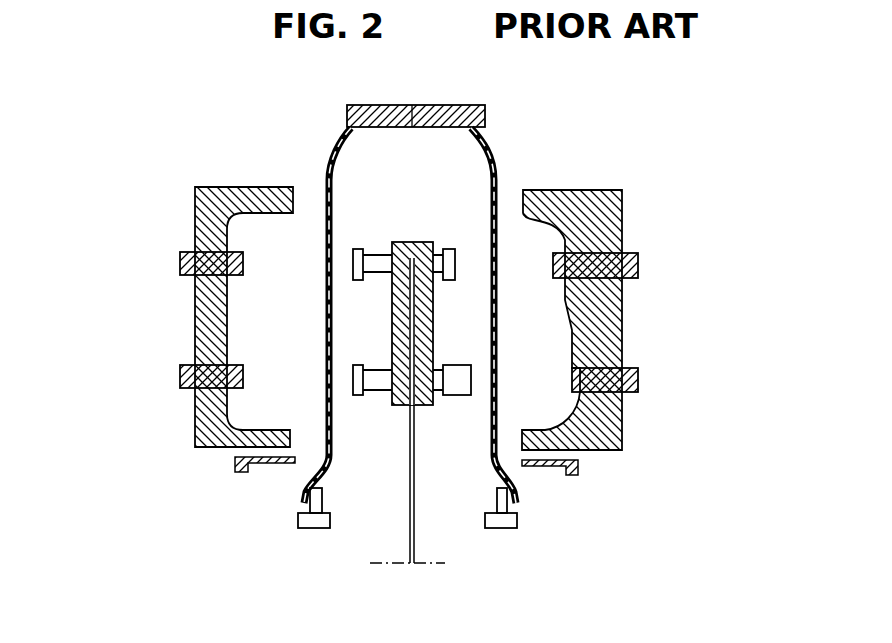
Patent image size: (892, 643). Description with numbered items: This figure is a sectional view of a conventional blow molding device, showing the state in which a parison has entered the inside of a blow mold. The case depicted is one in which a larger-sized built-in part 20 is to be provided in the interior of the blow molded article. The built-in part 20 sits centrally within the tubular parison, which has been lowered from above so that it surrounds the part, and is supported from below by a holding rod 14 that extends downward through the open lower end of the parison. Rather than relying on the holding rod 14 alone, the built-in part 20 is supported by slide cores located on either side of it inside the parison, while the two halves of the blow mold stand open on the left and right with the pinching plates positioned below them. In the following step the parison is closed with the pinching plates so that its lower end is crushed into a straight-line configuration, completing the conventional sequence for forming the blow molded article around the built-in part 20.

The holding rod 14 is at (412, 532).
The larger-sized built-in part 20 is at (396, 240).